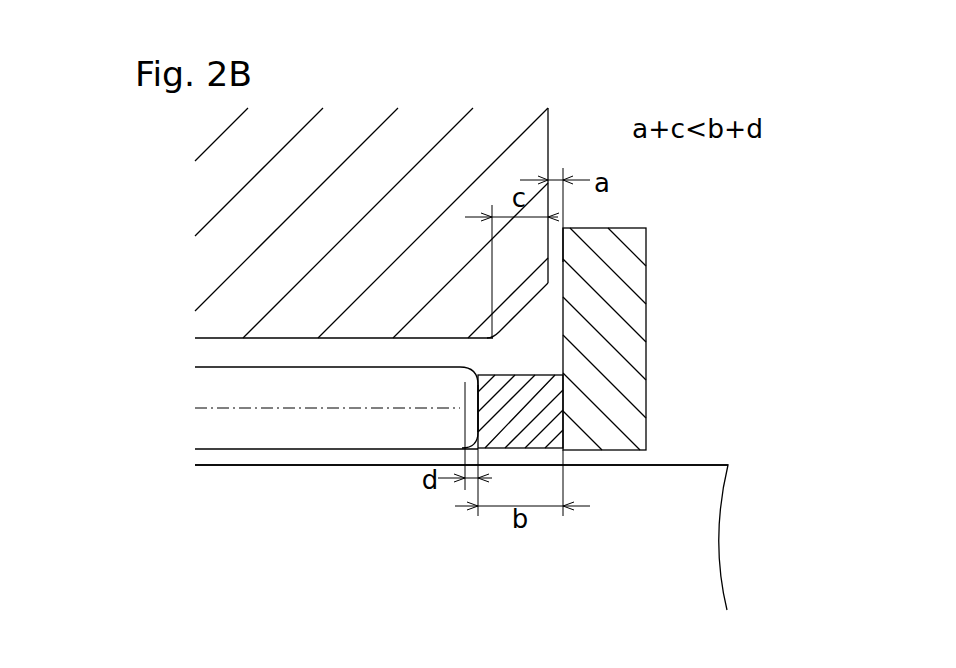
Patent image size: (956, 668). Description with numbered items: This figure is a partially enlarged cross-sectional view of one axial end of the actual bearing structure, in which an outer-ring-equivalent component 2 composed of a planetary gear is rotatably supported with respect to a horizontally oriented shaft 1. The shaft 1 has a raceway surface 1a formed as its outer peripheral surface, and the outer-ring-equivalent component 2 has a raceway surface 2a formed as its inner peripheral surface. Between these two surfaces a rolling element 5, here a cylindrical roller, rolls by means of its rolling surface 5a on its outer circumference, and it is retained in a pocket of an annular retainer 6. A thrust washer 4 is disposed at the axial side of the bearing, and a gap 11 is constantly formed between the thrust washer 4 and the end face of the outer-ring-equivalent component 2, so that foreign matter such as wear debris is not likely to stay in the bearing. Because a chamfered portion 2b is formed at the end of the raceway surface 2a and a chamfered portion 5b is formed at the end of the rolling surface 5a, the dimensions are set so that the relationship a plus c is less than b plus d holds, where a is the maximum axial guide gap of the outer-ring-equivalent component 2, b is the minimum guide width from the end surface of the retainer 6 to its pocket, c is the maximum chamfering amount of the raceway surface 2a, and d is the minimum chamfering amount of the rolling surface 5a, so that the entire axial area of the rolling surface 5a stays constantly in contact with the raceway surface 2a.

The shaft 1 is at (683, 463).
The raceway surface 1a is at (268, 464).
The outer-ring-equivalent component 2 is at (240, 215).
The raceway surface 2a is at (265, 339).
The chamfered portion 2b is at (523, 312).
The thrust washer 4 is at (647, 278).
The rolling element 5 is at (330, 436).
The rolling surface 5a is at (222, 451).
The chamfered portion 5b is at (467, 422).
The retainer 6 is at (542, 410).
The gap 11 is at (558, 243).